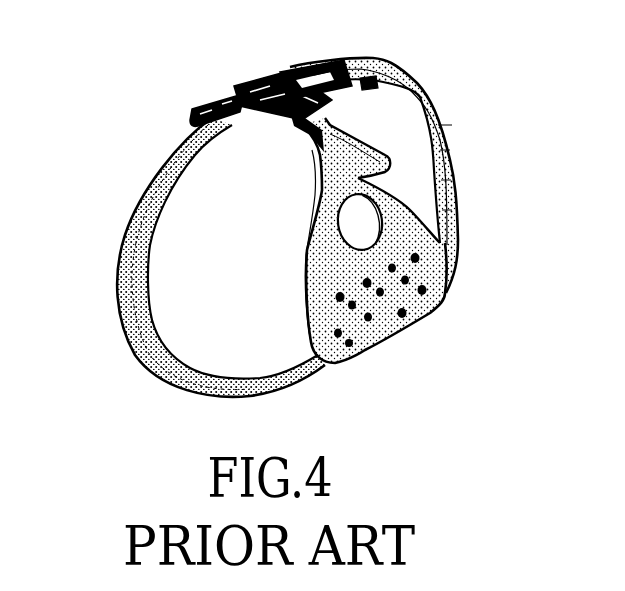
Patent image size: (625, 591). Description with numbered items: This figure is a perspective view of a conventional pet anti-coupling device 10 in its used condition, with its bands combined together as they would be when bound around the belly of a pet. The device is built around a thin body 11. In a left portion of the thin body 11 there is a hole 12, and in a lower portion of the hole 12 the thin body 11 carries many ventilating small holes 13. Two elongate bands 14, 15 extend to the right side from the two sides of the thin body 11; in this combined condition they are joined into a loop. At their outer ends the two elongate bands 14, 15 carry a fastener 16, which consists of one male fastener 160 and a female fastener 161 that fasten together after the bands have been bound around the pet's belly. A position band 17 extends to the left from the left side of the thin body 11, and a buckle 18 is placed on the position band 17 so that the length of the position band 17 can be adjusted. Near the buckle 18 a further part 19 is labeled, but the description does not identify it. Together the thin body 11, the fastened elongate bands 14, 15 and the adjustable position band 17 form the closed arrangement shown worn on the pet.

The prior art muzzle 10 is at (470, 193).
The thin body 11 is at (446, 278).
The hole 12 is at (343, 226).
The ventilating small holes 13 is at (398, 298).
The elongate band 14 is at (128, 257).
The elongate band 15 is at (453, 117).
The fastener 16 is at (346, 58).
The male fastener 160 is at (367, 85).
The female fastener 161 is at (323, 65).
The position band 17 is at (310, 136).
The buckle 18 is at (277, 110).
The strap end tab 19 is at (226, 100).